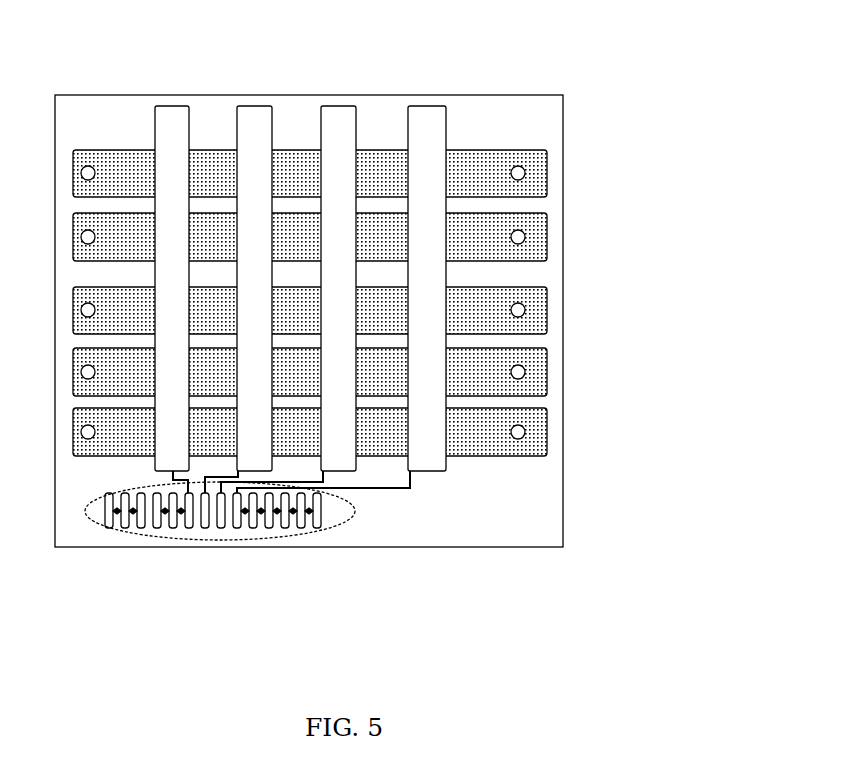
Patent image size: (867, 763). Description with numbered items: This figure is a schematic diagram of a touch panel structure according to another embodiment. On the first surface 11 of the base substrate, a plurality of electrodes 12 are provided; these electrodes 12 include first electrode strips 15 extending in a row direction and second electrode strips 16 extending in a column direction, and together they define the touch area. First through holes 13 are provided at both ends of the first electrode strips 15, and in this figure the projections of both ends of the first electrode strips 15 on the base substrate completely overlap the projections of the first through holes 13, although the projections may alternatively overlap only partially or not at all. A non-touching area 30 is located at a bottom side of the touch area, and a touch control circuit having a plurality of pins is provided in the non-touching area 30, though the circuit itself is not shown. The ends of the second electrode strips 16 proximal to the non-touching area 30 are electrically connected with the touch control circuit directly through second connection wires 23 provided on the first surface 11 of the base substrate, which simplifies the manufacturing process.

The first surface 11 is at (538, 95).
The electrodes 12 is at (376, 383).
The first through holes 13 is at (522, 177).
The first electrode strips 15 is at (508, 442).
The second electrode strips 16 is at (430, 471).
The second connection wires 23 is at (378, 488).
The non-touching area 30 is at (170, 528).